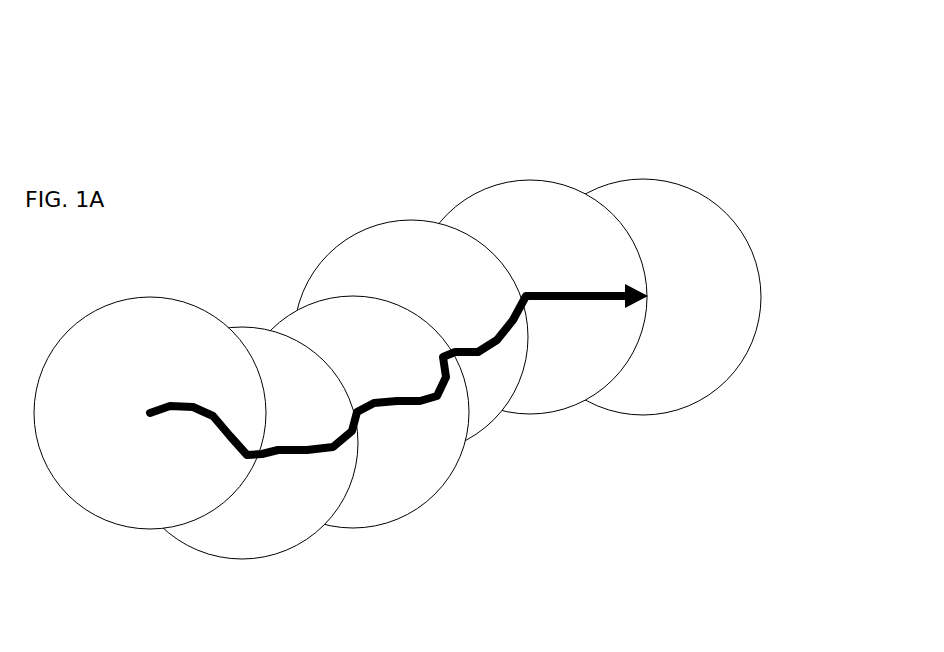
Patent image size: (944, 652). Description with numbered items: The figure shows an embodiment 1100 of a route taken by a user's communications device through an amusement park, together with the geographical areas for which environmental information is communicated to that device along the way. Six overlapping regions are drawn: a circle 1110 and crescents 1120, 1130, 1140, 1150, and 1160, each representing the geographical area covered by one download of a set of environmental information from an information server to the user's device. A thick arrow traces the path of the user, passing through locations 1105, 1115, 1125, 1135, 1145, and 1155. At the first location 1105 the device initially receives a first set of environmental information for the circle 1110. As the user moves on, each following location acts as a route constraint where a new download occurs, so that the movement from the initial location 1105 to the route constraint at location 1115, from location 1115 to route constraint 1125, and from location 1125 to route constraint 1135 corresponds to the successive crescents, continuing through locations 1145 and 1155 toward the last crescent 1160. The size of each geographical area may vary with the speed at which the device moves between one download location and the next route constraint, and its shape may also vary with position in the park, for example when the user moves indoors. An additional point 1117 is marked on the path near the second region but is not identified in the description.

The embodiment 1100 is at (685, 91).
The first location 1105 is at (143, 420).
The circle 1110 is at (157, 337).
The location 1115 is at (222, 461).
The third point 1117 is at (274, 443).
The crescent 1120 is at (279, 548).
The route constraint 1125 is at (326, 466).
The crescent 1130 is at (369, 337).
The route constraint 1135 is at (439, 406).
The crescent 1140 is at (426, 263).
The location 1145 is at (526, 311).
The crescent 1150 is at (546, 219).
The location 1155 is at (649, 309).
The crescent 1160 is at (677, 219).